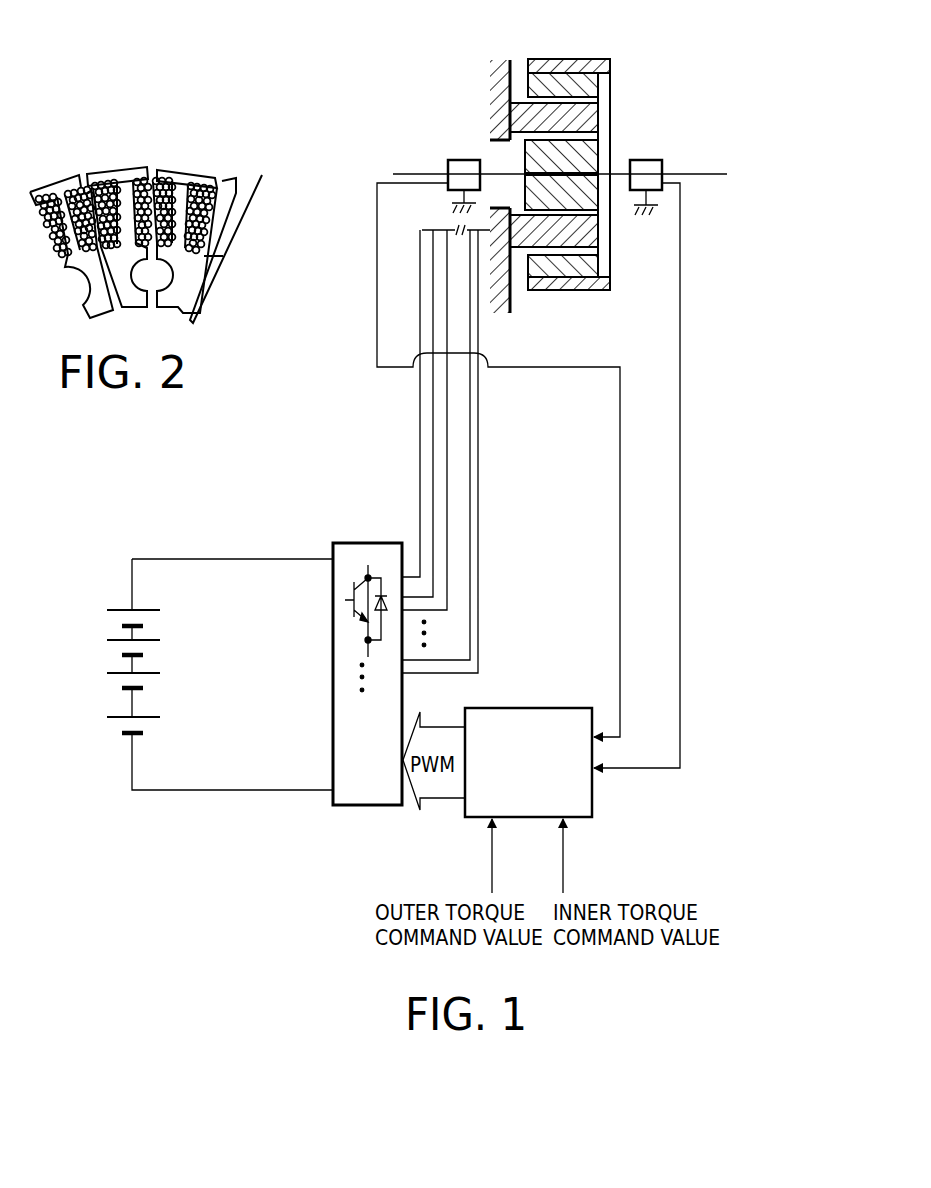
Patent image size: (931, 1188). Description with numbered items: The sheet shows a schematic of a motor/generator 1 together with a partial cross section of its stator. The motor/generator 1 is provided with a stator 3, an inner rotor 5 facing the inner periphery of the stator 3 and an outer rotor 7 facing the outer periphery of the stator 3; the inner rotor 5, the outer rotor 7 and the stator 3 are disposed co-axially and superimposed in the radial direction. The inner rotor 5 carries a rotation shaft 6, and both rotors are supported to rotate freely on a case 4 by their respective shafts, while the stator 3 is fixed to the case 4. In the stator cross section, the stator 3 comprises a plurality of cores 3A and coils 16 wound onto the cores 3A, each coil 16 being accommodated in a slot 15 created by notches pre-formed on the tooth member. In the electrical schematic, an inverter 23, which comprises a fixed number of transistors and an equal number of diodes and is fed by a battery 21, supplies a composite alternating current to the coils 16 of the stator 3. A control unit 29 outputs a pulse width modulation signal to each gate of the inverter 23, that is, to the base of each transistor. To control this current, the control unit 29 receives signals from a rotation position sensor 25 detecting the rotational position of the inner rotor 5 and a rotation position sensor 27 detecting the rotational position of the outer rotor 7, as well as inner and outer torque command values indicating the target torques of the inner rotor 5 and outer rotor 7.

In FIG. 1, the motor/generator 1 is at (476, 82).
In FIG. 2, the stator 3 is at (127, 146).
In FIG. 1, the stator 3 is at (594, 117).
In FIG. 2, the core 3A is at (60, 207).
In FIG. 1, the case 4 is at (511, 62).
In FIG. 1, the inner rotor 5 is at (594, 198).
In FIG. 1, the rotation shaft 6 is at (489, 170).
In FIG. 1, the outer rotor 7 is at (594, 83).
In FIG. 2, the slot 15 is at (223, 208).
In FIG. 2, the coil 16 is at (172, 188).
In FIG. 1, the battery 21 is at (161, 673).
In FIG. 1, the inverter 23 is at (370, 543).
In FIG. 1, the rotation position sensor 25 is at (453, 160).
In FIG. 1, the rotation position sensor 27 is at (655, 170).
In FIG. 1, the control unit 29 is at (507, 708).